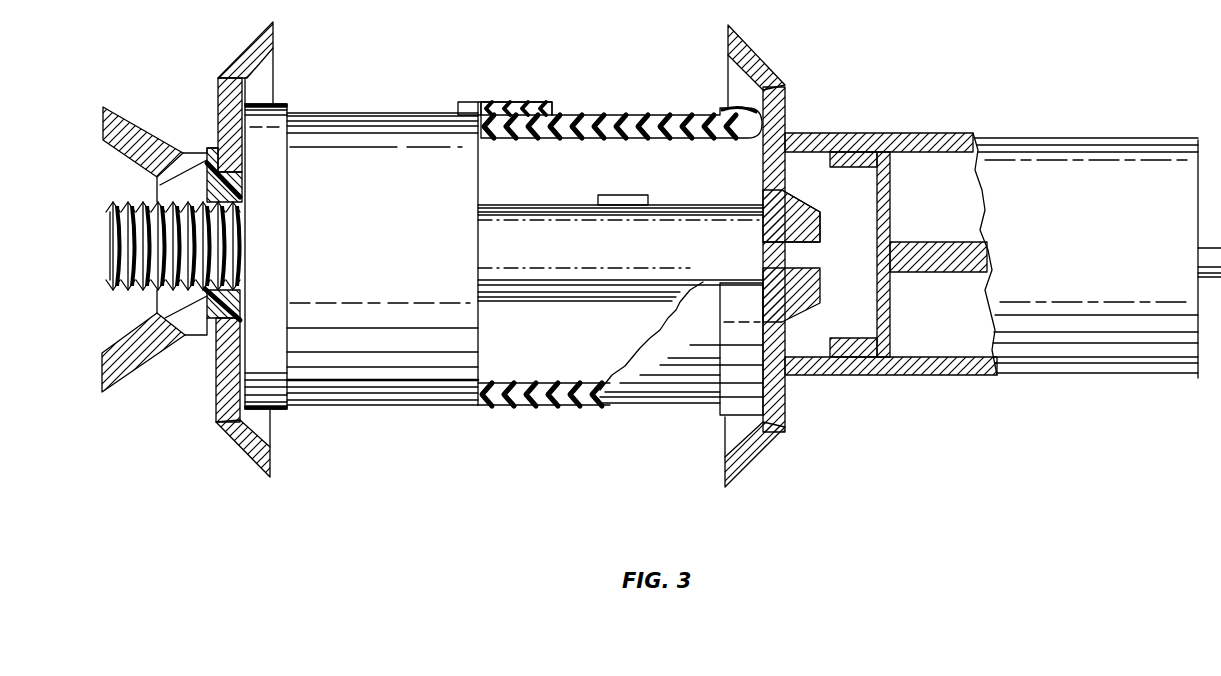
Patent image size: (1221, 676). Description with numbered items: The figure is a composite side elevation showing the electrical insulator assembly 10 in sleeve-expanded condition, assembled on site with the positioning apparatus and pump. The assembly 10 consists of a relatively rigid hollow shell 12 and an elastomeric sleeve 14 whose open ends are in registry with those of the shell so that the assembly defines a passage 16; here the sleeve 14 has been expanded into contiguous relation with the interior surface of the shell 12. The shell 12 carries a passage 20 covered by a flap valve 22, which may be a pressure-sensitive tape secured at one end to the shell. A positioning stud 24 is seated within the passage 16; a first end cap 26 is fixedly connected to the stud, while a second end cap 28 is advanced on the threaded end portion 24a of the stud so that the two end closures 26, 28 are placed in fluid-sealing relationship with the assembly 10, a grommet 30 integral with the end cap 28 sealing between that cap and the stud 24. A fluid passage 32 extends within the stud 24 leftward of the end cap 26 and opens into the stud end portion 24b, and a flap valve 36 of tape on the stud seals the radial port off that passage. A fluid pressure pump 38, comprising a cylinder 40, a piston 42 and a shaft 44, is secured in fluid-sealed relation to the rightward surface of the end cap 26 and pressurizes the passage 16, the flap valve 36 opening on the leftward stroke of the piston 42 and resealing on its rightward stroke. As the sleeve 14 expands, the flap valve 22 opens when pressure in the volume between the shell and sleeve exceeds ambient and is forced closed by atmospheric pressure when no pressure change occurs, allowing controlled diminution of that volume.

The electrical insulator assembly 10 is at (375, 105).
The hollow shell 12 is at (637, 116).
The elastomeric sleeve 14 is at (618, 141).
The passage 16 is at (572, 347).
The passage 20 is at (503, 120).
The flap valve 22 is at (533, 106).
The positioning stud 24 is at (533, 207).
The threaded end portion of the stud 24a is at (112, 260).
The end portion of the stud 24b is at (803, 207).
The first end cap 26 is at (760, 70).
The end cap 28 is at (267, 78).
The grommet 30 is at (237, 185).
The fluid passage 32 is at (127, 120).
The flap valve 36 is at (627, 197).
The fluid pressure pump 38 is at (1068, 125).
The cylinder 40 is at (852, 134).
The piston 42 is at (878, 277).
The shaft 44 is at (948, 242).